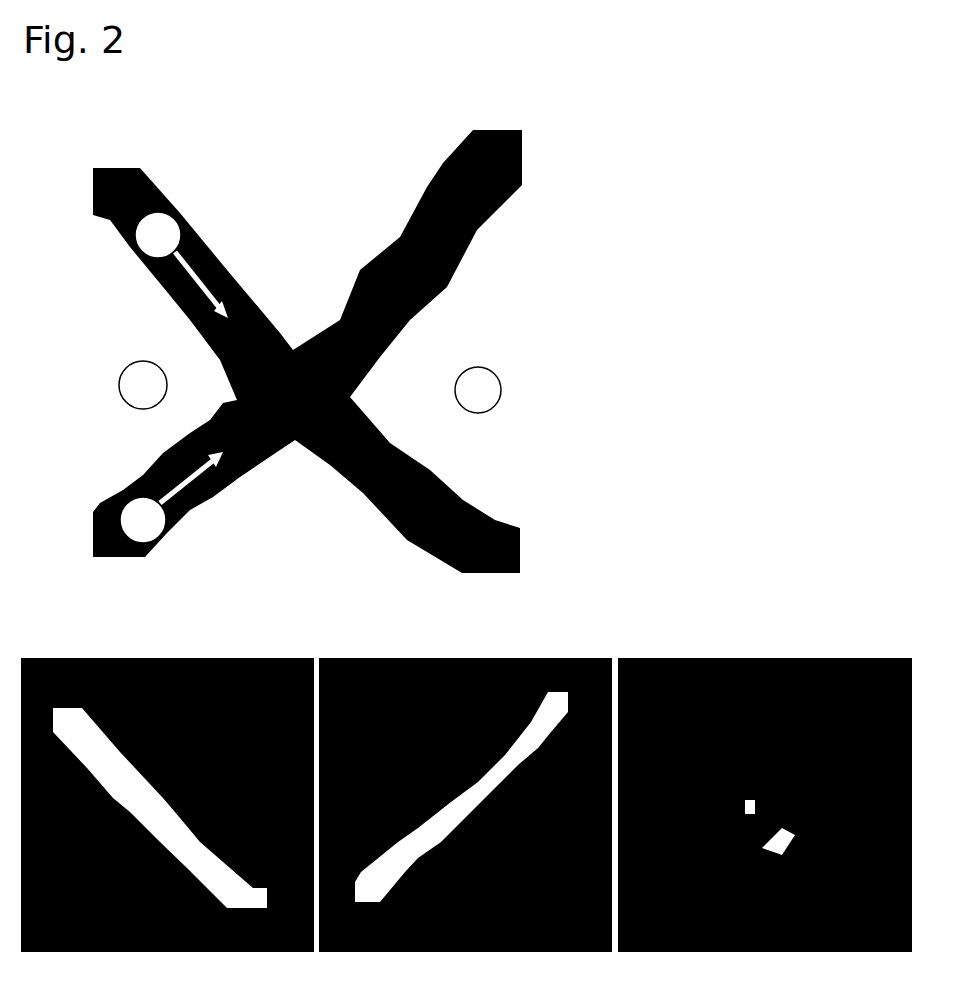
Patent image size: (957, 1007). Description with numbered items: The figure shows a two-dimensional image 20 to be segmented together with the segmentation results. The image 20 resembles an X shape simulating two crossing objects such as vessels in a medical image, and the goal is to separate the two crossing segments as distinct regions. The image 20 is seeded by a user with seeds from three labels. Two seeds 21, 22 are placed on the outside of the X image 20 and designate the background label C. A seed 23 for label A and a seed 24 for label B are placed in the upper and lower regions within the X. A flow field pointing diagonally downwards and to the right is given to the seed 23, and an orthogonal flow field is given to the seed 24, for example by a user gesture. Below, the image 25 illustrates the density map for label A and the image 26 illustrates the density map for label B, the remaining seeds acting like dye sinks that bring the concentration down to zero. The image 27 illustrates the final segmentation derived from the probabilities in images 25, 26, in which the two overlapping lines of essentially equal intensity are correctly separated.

The image 20 is at (556, 585).
The seed 21 is at (125, 407).
The seed 22 is at (498, 404).
The seed 23 is at (138, 253).
The seed 24 is at (155, 541).
The image 25 is at (178, 990).
The image 26 is at (468, 990).
The image 27 is at (758, 990).